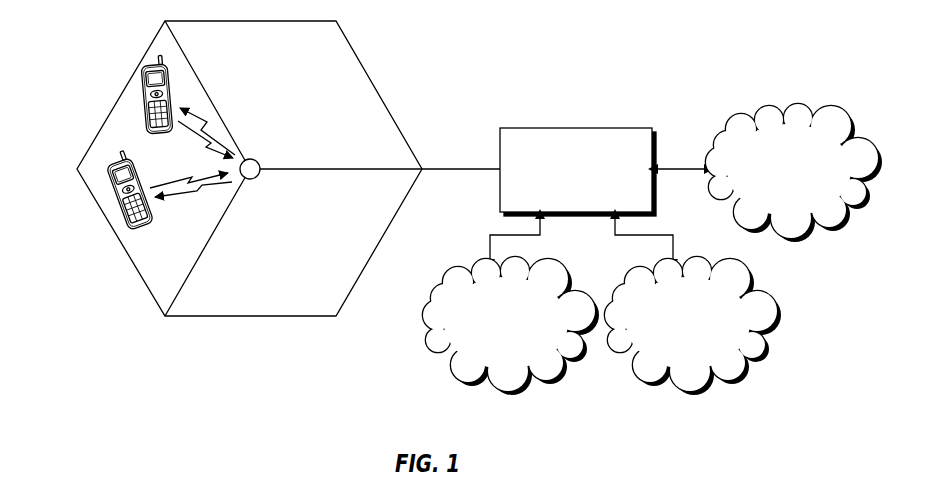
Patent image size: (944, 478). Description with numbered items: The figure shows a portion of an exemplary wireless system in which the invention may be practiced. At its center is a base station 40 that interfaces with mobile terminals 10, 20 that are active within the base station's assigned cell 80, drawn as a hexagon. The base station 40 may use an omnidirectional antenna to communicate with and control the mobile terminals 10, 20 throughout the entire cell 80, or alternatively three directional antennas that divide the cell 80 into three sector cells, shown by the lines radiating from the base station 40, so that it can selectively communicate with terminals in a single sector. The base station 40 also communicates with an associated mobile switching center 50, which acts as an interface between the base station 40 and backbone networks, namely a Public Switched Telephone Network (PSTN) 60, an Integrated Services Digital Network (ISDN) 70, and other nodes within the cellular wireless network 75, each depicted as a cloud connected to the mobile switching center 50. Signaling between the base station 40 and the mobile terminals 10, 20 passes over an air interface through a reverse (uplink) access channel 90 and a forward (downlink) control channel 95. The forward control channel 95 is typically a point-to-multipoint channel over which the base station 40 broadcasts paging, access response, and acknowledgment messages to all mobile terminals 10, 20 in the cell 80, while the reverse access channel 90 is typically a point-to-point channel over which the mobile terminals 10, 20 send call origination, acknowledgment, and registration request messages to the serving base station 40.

The mobile terminal 10 is at (114, 206).
The mobile terminal 20 is at (141, 100).
The base station 40 is at (253, 178).
The mobile switching center 50 is at (576, 128).
The Public Switched Telephone Network (PSTN) 60 is at (767, 293).
The Integrated Services Digital Network (ISDN) 70 is at (426, 345).
The wireless network 75 is at (802, 108).
The cell 80 is at (250, 20).
The reverse (uplink) access channel 90 is at (198, 134).
The forward (downlink) control channel 95 is at (220, 138).